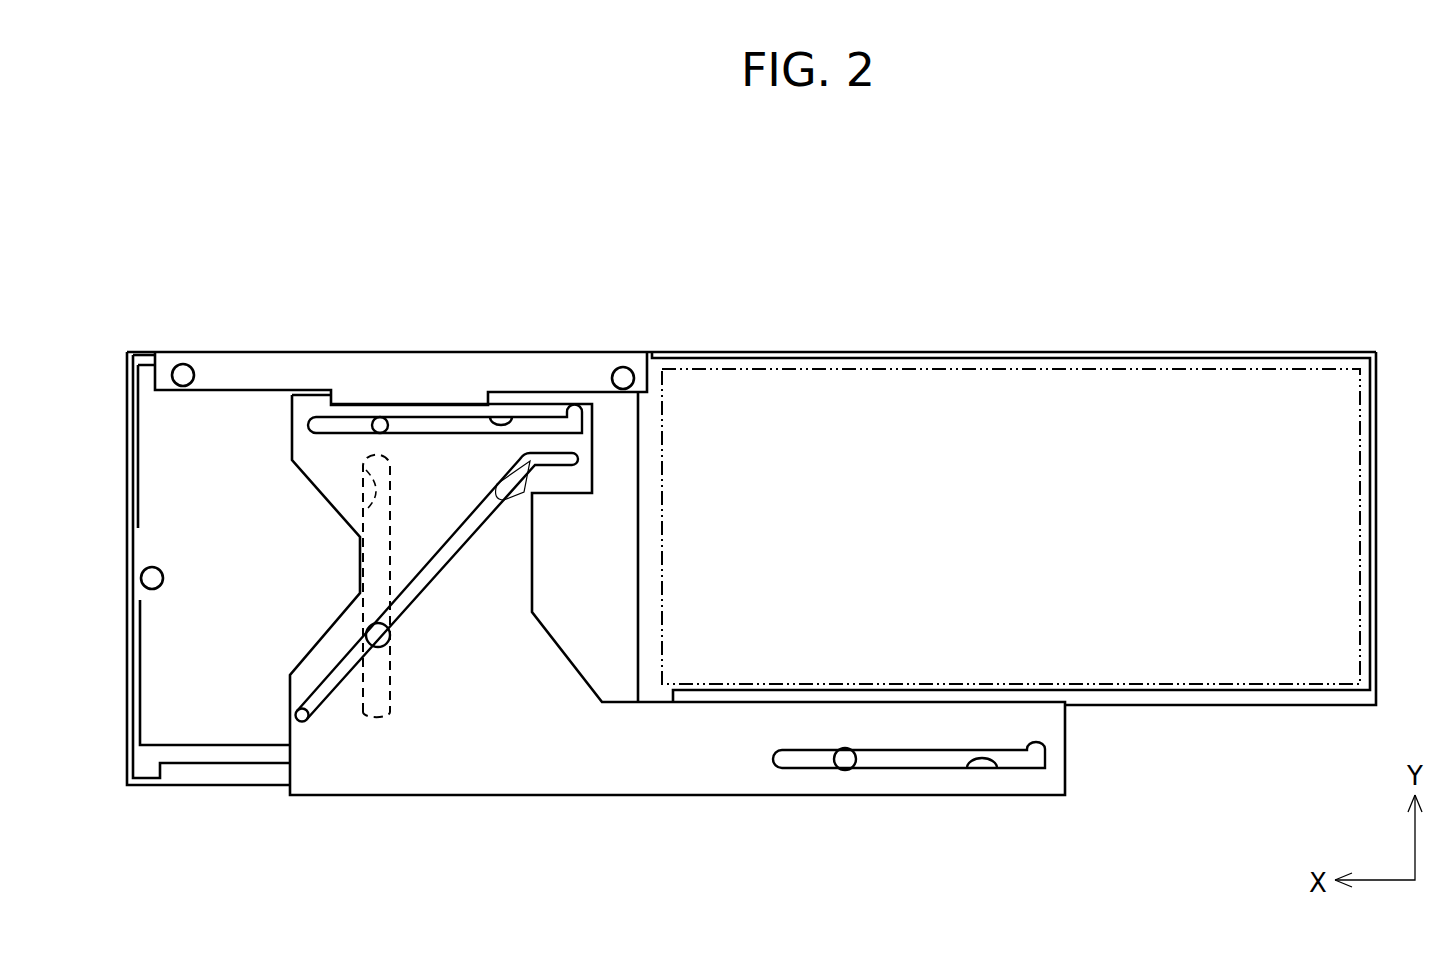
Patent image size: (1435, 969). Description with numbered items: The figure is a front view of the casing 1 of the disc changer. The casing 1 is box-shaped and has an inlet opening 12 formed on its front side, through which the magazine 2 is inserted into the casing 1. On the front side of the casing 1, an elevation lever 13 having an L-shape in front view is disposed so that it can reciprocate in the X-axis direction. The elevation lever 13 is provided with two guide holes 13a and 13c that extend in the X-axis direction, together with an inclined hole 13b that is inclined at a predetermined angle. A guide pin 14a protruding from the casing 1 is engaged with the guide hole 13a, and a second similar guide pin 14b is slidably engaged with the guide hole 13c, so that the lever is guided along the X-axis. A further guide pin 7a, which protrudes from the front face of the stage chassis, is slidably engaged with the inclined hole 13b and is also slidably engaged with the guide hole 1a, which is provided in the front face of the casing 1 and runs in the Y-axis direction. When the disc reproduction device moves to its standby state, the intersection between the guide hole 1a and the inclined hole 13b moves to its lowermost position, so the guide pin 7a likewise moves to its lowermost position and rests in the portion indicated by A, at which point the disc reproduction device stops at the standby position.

The casing 1 is at (825, 352).
The guide hole 1a is at (367, 458).
The magazine 2 is at (1055, 372).
The inlet opening 12 is at (1267, 440).
The elevation lever 13 is at (537, 762).
The guide hole 13a is at (513, 417).
The inclined hole 13b is at (525, 490).
The guide hole 13c is at (988, 757).
The guide pin 14a is at (381, 418).
The guide pin 14b is at (845, 770).
The guide pin 7a is at (380, 637).
The lowermost position portion A is at (302, 722).